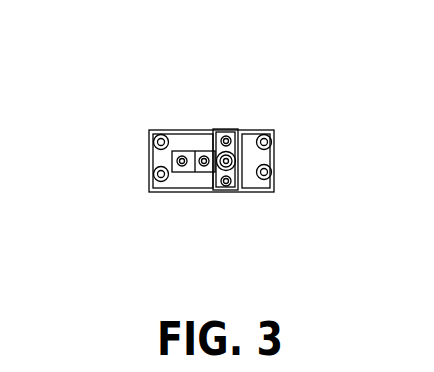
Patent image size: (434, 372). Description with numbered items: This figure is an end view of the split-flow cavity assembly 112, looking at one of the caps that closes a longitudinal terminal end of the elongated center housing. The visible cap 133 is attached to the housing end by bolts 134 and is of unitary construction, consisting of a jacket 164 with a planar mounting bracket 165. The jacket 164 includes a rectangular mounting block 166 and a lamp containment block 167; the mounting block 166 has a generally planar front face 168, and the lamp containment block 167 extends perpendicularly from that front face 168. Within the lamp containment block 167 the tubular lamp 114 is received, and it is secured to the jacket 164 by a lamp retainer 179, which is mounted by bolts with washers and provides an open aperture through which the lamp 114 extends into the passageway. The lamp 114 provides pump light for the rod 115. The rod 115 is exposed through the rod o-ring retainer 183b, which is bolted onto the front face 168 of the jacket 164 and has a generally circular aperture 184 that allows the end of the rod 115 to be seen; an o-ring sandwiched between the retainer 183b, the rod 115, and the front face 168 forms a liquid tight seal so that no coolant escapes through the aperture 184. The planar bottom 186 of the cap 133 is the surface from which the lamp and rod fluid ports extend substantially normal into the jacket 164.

The cavity assembly 112 is at (268, 116).
The lamp 114 is at (240, 154).
The rod 115 is at (276, 125).
The cap 133 is at (149, 158).
The bolts 134 is at (172, 130).
The jacket 164 is at (194, 129).
The planar mounting bracket 165 is at (183, 184).
The mounting block 166 is at (186, 129).
The lamp containment block 167 is at (226, 129).
The front face 168 is at (205, 176).
The lamp retainer 179 is at (255, 183).
The rod o-ring retainer 183b is at (171, 158).
The aperture 184 is at (186, 174).
The planar bottom 186 is at (244, 179).